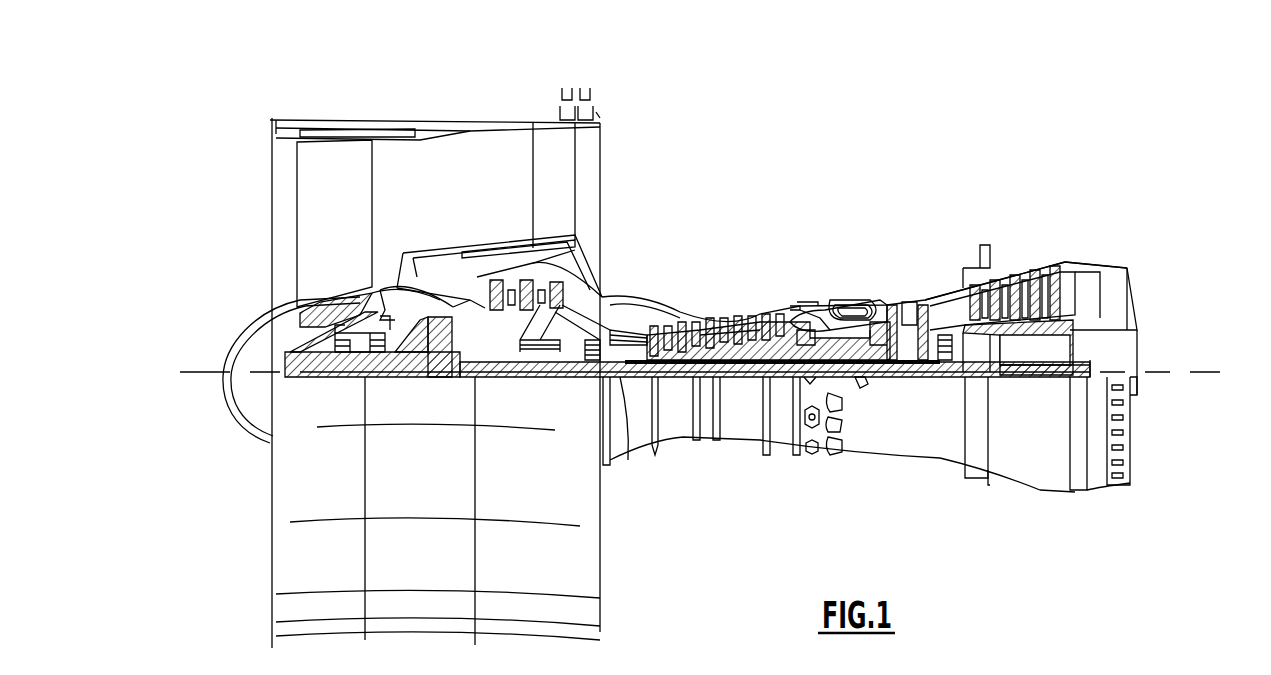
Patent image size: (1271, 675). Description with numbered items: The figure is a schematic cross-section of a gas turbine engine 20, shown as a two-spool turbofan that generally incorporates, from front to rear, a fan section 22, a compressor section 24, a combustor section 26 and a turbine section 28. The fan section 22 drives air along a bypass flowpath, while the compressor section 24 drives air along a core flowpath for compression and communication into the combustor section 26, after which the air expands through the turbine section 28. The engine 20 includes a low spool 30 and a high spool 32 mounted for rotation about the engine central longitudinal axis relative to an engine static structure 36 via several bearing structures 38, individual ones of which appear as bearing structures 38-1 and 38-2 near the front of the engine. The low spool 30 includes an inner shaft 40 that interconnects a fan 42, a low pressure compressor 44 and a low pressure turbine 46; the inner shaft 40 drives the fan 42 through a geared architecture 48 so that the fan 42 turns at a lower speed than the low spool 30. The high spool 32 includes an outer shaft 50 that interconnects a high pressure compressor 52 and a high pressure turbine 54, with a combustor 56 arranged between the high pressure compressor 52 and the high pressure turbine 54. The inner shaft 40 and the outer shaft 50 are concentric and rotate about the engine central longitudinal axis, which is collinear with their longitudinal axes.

The gas turbine engine 20 is at (852, 165).
The fan section 22 is at (372, 119).
The compressor section 24 is at (647, 293).
The combustor section 26 is at (848, 284).
The turbine section 28 is at (981, 249).
The low spool 30 is at (744, 375).
The high spool 32 is at (785, 328).
The engine static structure 36 is at (782, 454).
The bearing structures 38 is at (945, 373).
The bearing structure 38-1 is at (358, 348).
The bearing structure 38-2 is at (563, 363).
The inner shaft 40 is at (626, 460).
The fan 42 is at (348, 237).
The low pressure compressor 44 is at (542, 288).
The low pressure turbine 46 is at (1021, 266).
The geared architecture 48 is at (443, 360).
The outer shaft 50 is at (863, 373).
The high pressure compressor 52 is at (718, 343).
The high pressure turbine 54 is at (908, 293).
The combustor 56 is at (852, 317).